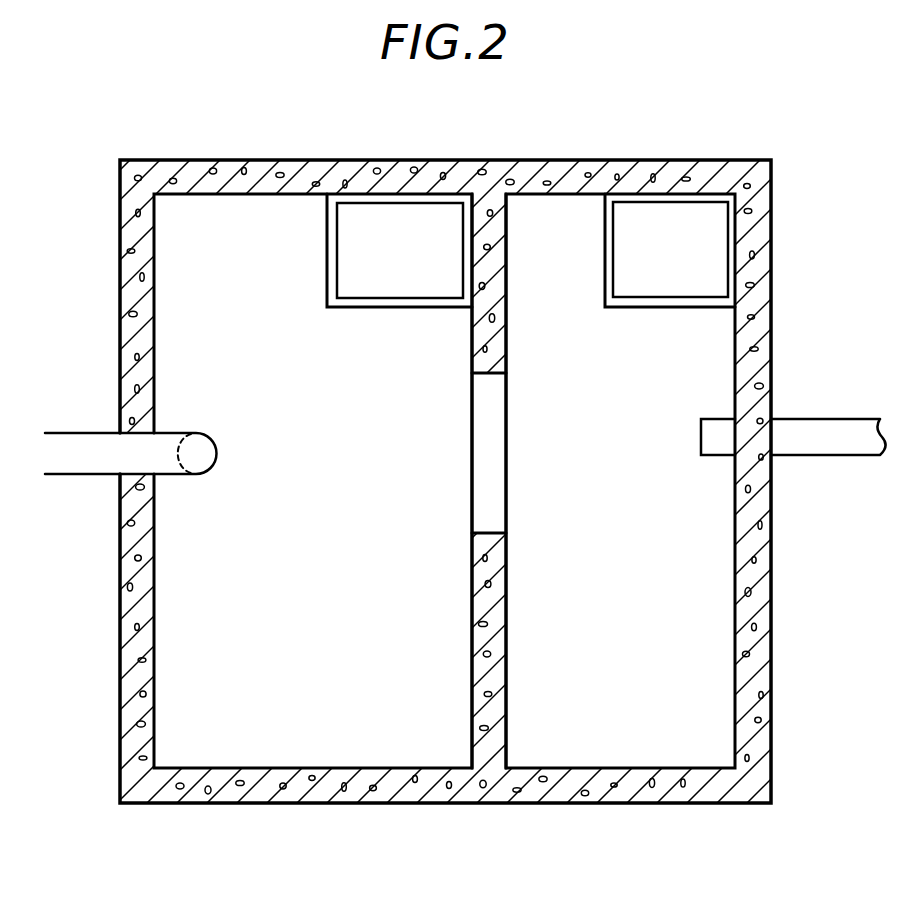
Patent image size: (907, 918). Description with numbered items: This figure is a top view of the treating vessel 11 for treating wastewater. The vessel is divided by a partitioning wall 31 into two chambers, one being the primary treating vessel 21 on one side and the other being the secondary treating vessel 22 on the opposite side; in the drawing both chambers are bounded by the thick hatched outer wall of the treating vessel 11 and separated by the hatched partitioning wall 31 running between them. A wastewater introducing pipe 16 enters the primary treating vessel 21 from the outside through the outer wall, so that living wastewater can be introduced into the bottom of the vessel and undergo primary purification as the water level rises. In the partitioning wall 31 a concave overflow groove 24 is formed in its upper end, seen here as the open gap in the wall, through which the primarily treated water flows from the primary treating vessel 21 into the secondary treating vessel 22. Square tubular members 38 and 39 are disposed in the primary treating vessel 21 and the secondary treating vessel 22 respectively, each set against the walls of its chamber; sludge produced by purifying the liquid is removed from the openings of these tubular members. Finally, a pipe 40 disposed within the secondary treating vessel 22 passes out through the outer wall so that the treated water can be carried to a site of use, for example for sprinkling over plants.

The treating vessel 11 is at (700, 803).
The wastewater introducing pipe 16 is at (70, 478).
The primary treating vessel 21 is at (292, 730).
The secondary treating vessel 22 is at (706, 697).
The concave overflow groove 24 is at (493, 483).
The partitioning wall 31 is at (487, 655).
The square tubular member 38 is at (437, 196).
The square tubular member 39 is at (682, 200).
The pipe 40 is at (843, 457).